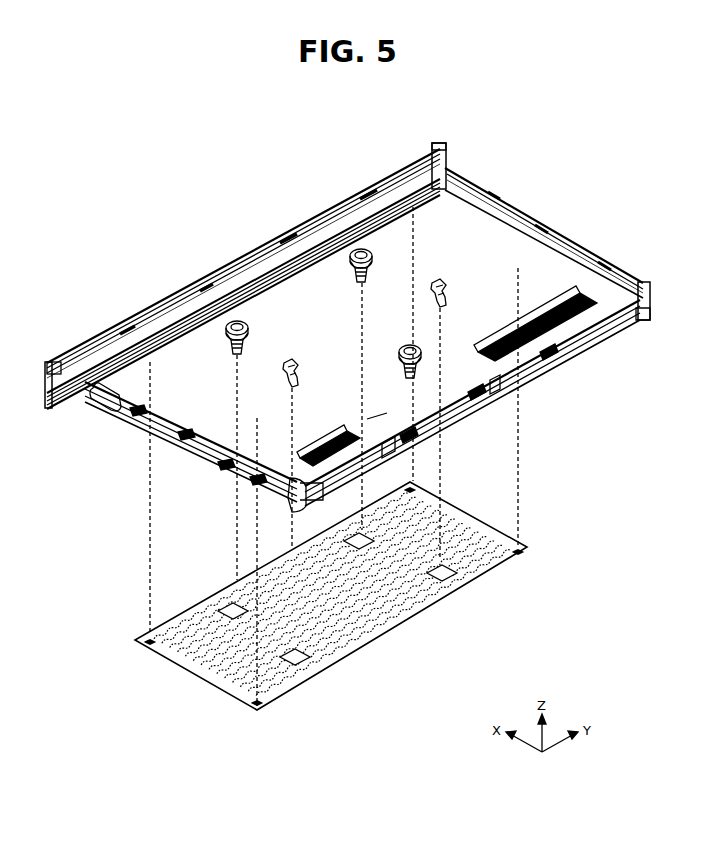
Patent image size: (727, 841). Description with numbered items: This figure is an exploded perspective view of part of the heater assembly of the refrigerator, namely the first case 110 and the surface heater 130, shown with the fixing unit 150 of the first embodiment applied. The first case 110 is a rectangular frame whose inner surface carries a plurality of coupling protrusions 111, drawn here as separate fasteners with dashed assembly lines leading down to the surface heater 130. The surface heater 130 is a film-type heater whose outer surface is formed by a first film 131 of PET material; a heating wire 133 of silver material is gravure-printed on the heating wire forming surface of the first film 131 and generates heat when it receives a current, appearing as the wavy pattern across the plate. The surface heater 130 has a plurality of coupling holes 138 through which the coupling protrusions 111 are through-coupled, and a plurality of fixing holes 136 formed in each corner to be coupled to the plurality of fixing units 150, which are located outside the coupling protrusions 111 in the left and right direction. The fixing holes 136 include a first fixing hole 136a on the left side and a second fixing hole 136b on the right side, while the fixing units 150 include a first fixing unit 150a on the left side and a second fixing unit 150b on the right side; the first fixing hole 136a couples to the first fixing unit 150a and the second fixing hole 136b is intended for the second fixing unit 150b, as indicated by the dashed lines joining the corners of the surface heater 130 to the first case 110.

The first case 110 is at (502, 191).
The coupling protrusion 111 is at (366, 247).
The surface heater 130 is at (358, 622).
The first film 131 is at (540, 550).
The heating wire 133 is at (376, 618).
The fixing hole 136 is at (333, 622).
The first fixing hole 136a is at (150, 644).
The second fixing hole 136b is at (410, 492).
The coupling hole 138 is at (360, 545).
The fixing unit 150 is at (345, 412).
The first fixing unit 150a is at (150, 360).
The second fixing unit 150b is at (413, 204).